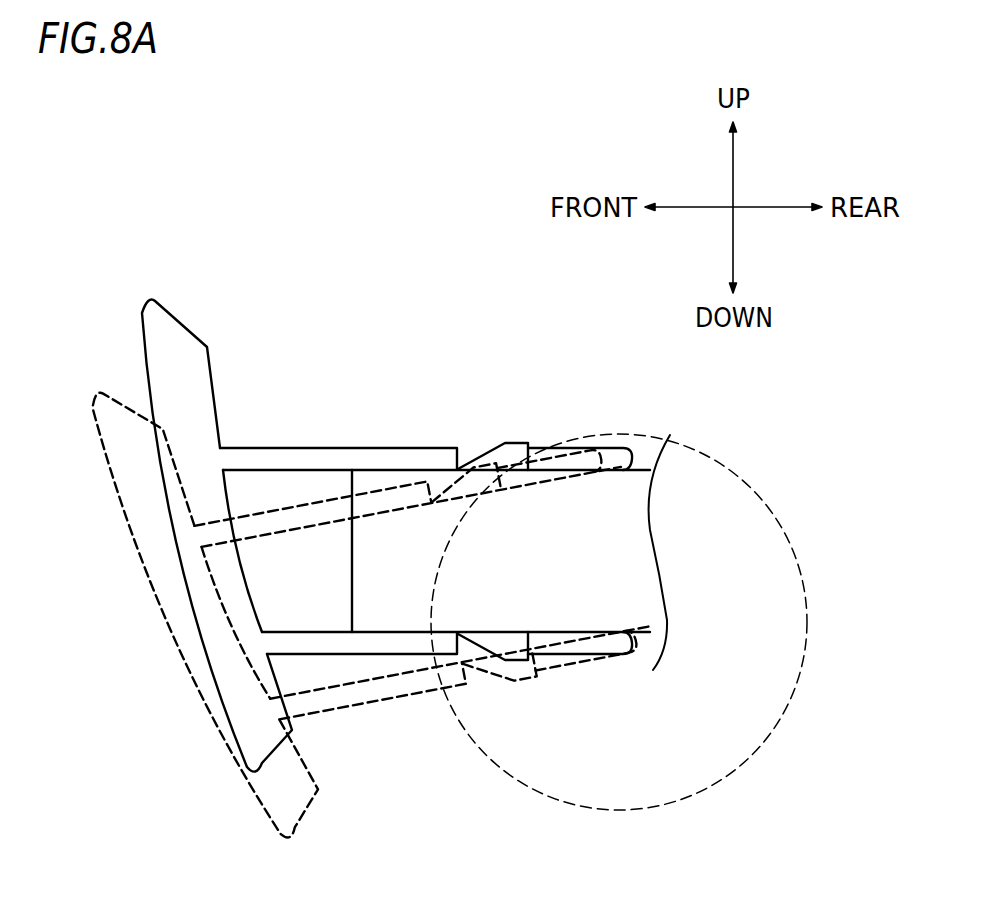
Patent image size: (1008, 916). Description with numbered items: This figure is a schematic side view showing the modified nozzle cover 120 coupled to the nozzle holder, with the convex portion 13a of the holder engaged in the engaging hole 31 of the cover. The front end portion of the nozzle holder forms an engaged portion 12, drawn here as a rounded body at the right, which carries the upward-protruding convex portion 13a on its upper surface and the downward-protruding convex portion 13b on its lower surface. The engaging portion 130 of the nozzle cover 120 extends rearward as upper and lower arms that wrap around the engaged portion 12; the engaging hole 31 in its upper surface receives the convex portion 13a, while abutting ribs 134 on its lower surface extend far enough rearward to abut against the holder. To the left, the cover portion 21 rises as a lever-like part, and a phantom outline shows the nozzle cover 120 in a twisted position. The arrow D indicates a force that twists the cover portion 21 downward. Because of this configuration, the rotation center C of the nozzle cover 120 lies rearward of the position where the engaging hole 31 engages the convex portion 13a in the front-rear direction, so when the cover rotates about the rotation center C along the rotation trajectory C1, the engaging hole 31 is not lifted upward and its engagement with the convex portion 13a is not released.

The cover portion 21 is at (178, 321).
The nozzle cover 120 is at (282, 296).
The engaging portion 130 is at (335, 444).
The engaging hole 31 is at (473, 448).
The convex portion 13a is at (520, 447).
The convex portion 13b is at (520, 662).
The abutting ribs 134 is at (587, 657).
The engaged portion 12 is at (630, 553).
The rotation trajectory C1 is at (747, 488).
The rotation center C is at (618, 627).
The arrow D is at (135, 278).